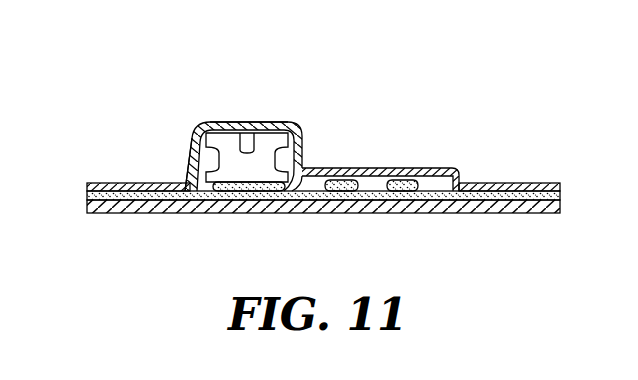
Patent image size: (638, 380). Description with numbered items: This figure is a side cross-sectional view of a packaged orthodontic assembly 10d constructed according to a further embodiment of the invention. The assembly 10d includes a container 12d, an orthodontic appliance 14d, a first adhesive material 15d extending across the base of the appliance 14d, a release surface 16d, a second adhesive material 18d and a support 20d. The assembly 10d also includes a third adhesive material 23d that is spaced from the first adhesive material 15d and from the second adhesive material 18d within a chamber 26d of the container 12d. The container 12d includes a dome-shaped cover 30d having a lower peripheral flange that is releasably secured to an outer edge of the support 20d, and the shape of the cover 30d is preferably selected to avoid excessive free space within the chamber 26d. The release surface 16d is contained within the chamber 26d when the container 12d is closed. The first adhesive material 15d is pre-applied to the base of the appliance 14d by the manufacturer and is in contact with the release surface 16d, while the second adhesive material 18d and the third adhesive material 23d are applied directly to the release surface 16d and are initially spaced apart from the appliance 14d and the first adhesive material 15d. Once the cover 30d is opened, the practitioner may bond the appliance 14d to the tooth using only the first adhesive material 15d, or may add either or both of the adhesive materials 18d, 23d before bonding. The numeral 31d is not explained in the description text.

The packaged orthodontic assembly 10d is at (132, 52).
The container 12d is at (228, 120).
The orthodontic appliance 14d is at (270, 120).
The first adhesive material 15d is at (285, 179).
The release surface 16d is at (448, 176).
The second adhesive material 18d is at (345, 180).
The support 20d is at (218, 213).
The third adhesive material 23d is at (403, 180).
The chamber 26d is at (196, 151).
The dome-shaped cover 30d is at (403, 110).
The substrate 31d is at (147, 215).